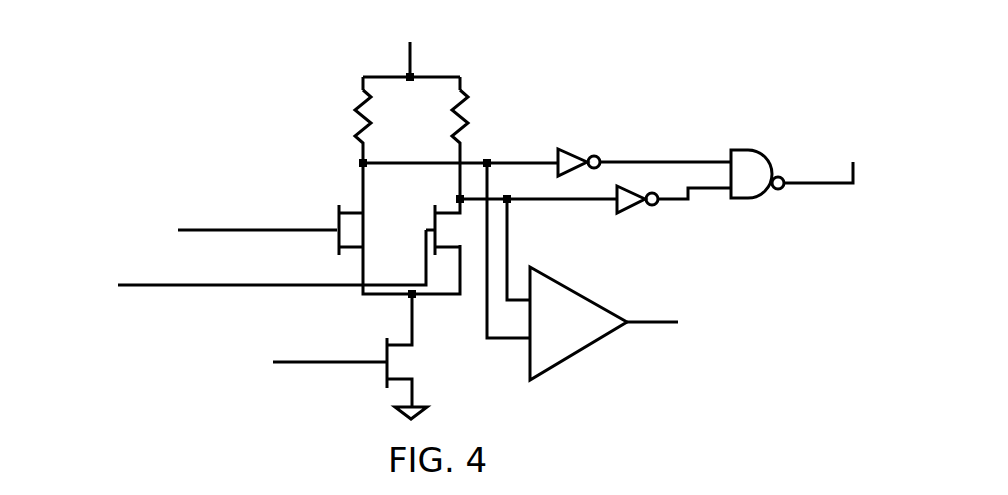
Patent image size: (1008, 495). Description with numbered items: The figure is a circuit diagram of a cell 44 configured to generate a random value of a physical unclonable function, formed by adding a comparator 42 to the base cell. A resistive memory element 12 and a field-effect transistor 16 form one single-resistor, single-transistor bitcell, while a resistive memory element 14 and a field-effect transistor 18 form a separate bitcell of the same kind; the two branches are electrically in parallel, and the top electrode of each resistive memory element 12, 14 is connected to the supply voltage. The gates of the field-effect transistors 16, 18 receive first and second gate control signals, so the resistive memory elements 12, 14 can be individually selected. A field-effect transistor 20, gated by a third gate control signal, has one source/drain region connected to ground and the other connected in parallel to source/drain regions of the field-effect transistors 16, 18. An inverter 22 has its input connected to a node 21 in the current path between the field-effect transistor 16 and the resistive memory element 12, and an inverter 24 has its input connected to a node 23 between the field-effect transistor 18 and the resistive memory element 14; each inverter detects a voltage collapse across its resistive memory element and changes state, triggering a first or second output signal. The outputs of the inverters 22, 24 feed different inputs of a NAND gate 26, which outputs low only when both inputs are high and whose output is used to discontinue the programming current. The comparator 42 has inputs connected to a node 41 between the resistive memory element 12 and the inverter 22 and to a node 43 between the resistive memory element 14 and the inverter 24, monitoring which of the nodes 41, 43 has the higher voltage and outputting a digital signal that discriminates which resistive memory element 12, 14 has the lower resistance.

The cell 44 is at (140, 50).
The resistive memory element 12 is at (338, 116).
The resistive memory element 14 is at (482, 80).
The node 21 is at (360, 163).
The node 23 is at (458, 198).
The field-effect transistor 16 is at (318, 210).
The field-effect transistor 18 is at (407, 246).
The field-effect transistor 20 is at (352, 340).
The node 41 is at (488, 160).
The node 43 is at (508, 197).
The inverter 22 is at (568, 168).
The inverter 24 is at (627, 203).
The NAND gate 26 is at (745, 182).
The comparator 42 is at (592, 380).